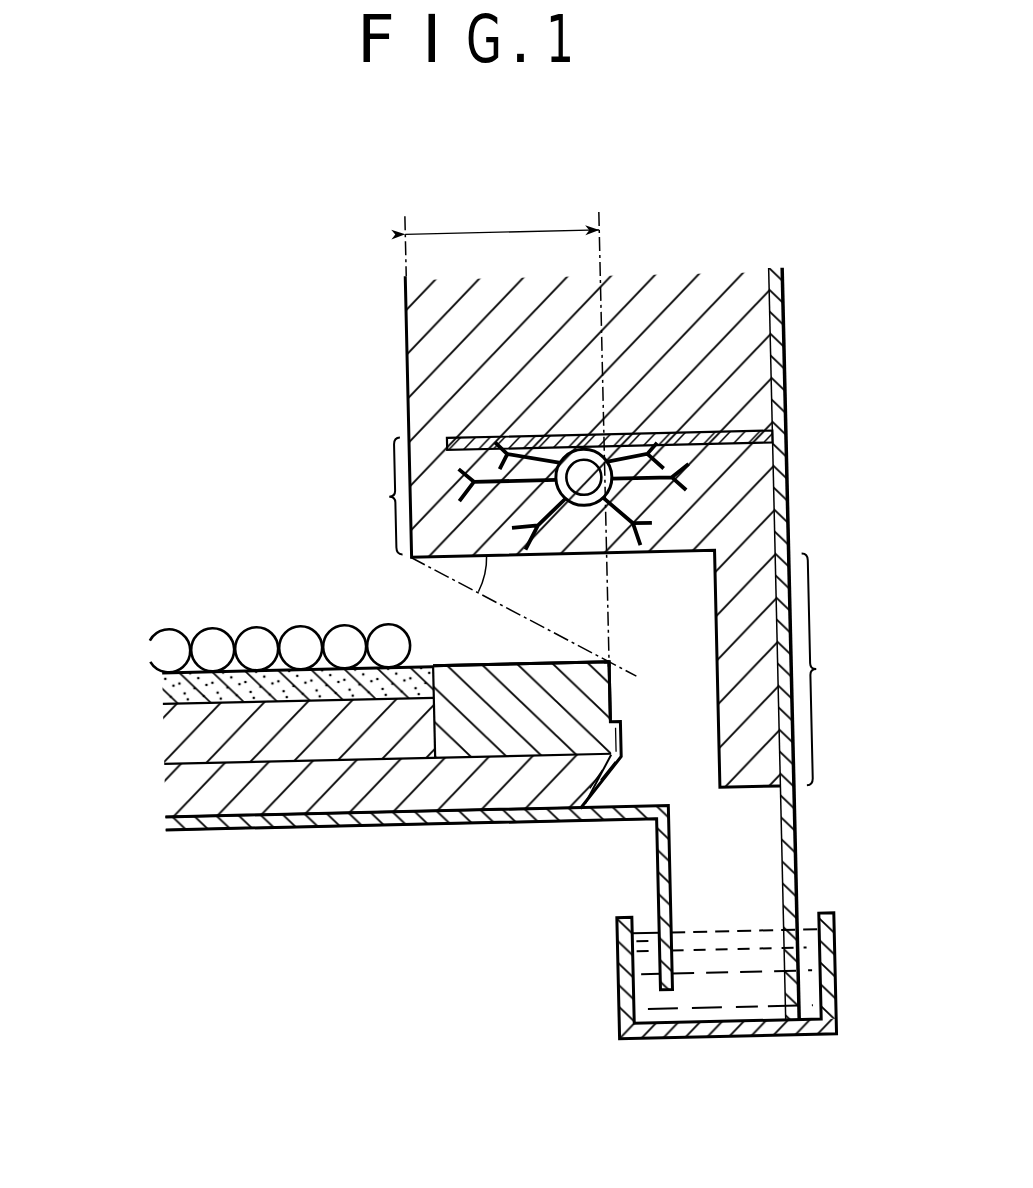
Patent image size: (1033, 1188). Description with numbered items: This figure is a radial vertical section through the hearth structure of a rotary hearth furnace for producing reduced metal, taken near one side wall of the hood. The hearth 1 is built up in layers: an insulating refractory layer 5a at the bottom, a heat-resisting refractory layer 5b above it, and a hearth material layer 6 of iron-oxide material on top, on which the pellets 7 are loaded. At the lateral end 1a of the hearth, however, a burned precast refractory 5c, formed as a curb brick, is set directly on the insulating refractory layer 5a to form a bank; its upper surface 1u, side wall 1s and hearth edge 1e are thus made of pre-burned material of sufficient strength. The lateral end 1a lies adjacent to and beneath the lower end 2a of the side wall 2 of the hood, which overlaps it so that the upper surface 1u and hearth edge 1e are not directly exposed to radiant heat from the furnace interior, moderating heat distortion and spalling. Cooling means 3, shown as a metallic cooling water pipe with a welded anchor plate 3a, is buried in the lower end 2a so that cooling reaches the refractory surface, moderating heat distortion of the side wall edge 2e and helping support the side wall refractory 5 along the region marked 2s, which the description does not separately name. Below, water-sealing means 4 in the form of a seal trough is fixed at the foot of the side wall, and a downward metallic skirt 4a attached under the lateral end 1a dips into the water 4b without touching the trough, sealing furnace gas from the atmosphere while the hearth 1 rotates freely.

The rotary hearth 1 is at (383, 738).
The lateral end of the hearth 1a is at (528, 774).
The hearth edge 1e is at (613, 659).
The side wall of the hearth lateral end 1s is at (611, 704).
The upper surface of the lateral end 1u is at (493, 658).
The side wall 2 is at (684, 264).
The lower end of the side wall 2a is at (371, 496).
The side wall edge 2e is at (411, 556).
The side portion of heating block 2s is at (835, 668).
The cooling means 3 is at (555, 435).
The anchor plate 3a is at (619, 495).
The water-sealing means 4 is at (763, 1003).
The skirt 4a is at (653, 884).
The water 4b is at (702, 993).
The side wall refractory 5 is at (758, 371).
The insulating refractory layer 5a is at (339, 789).
The heat-resisting refractory layer 5b is at (233, 740).
The burned precast refractory 5c is at (512, 738).
The hearth material layer 6 is at (178, 675).
The pellets 7 is at (219, 631).